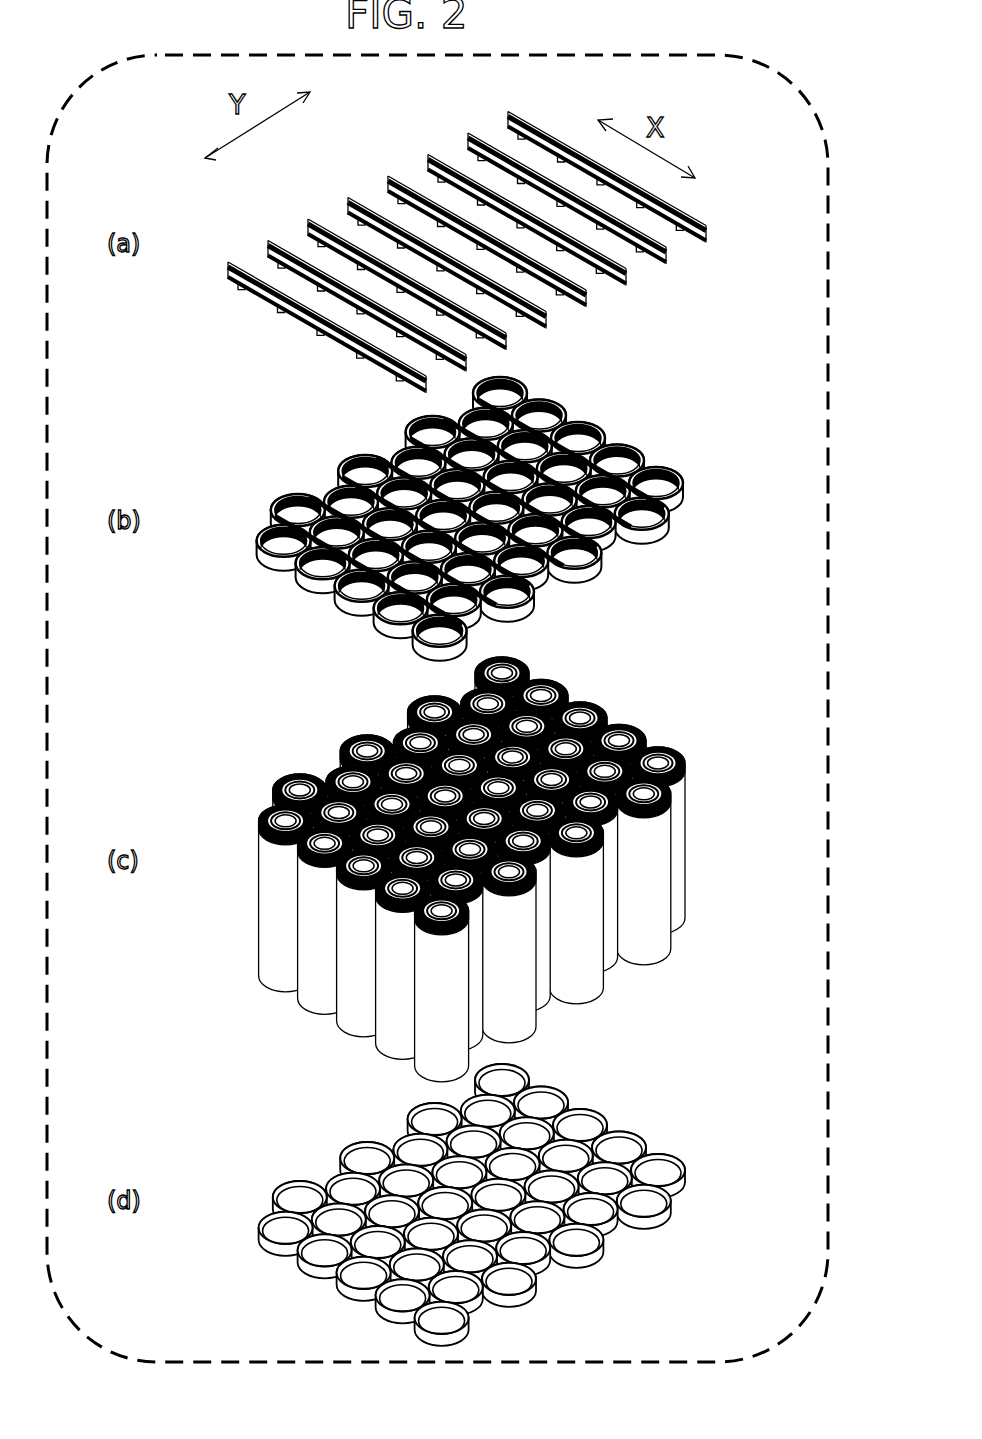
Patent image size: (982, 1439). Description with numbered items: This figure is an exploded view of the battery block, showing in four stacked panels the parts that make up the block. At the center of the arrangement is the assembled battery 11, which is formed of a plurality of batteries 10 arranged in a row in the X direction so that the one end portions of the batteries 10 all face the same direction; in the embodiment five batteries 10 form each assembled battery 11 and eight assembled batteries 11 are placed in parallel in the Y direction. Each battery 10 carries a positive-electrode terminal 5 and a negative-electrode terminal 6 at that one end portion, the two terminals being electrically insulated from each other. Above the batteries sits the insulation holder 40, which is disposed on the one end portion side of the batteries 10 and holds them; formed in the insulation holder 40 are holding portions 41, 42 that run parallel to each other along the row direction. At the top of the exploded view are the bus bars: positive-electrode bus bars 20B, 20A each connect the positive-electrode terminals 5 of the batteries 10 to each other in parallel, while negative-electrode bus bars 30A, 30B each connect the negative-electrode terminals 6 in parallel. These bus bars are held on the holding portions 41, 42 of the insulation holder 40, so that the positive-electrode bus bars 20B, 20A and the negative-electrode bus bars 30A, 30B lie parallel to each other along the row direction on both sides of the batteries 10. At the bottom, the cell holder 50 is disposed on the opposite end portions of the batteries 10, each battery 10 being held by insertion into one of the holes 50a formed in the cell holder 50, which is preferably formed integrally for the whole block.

The positive-electrode bus bar 20A is at (710, 228).
The positive-electrode bus bar 20B is at (665, 255).
The negative-electrode bus bar 30A is at (232, 258).
The negative-electrode bus bar 30B is at (270, 238).
The insulation holder 40 is at (425, 525).
The holding portion 41 is at (520, 617).
The holding portion 42 is at (272, 508).
The positive-electrode terminal 5 is at (278, 790).
The negative-electrode terminal 6 is at (265, 823).
The battery 10 is at (428, 869).
The assembled battery 11 is at (450, 980).
The cell holder 50 is at (423, 1205).
The hole 50a is at (268, 1215).